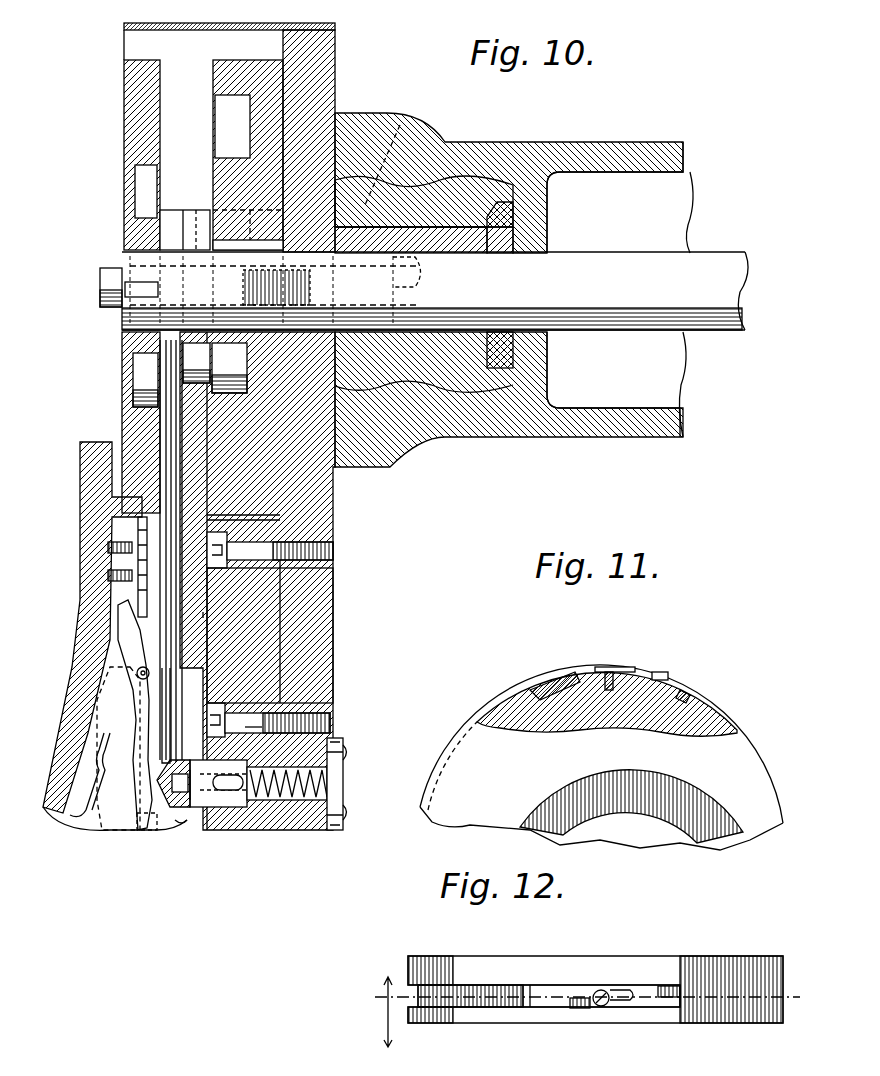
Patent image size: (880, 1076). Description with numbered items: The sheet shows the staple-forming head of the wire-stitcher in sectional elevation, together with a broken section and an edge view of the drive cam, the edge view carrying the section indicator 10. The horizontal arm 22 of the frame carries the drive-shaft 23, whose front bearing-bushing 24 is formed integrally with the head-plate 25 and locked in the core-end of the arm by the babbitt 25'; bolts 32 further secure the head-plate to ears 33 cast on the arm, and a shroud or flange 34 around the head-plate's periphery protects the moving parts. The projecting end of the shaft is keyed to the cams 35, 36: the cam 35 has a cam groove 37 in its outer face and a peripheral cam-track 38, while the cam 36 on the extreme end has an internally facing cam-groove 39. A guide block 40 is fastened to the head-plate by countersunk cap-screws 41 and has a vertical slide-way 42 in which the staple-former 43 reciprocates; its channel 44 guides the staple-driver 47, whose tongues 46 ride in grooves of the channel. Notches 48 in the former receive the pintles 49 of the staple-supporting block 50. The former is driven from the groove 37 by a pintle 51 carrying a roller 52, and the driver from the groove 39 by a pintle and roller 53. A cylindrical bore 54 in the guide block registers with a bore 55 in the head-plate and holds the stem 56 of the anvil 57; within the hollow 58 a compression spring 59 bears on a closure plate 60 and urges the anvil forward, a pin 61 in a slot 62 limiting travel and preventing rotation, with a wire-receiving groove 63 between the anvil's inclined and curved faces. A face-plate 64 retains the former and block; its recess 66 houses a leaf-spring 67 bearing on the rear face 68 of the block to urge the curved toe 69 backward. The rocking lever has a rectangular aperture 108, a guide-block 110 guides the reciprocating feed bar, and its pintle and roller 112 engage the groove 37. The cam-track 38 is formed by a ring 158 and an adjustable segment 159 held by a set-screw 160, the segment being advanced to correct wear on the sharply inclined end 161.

In FIG. 12, the Figure 10 section indicator 10 is at (567, 1012).
In FIG. 10, the arm 22 is at (650, 122).
In FIG. 10, the drive-shaft 23 is at (435, 291).
In FIG. 10, the bearing-bushing 24 is at (515, 233).
In FIG. 10, the head-plate 25 is at (431, 430).
In FIG. 10, the babbitt 25' is at (424, 313).
In FIG. 10, the bolts 32 is at (426, 273).
In FIG. 10, the ears 33 is at (395, 126).
In FIG. 10, the shroud or flange 34 is at (124, 26).
In FIG. 10, the cam 35 is at (225, 60).
In FIG. 11, the cam 35 is at (740, 752).
In FIG. 12, the cam 35 is at (708, 972).
In FIG. 10, the cam 36 is at (124, 101).
In FIG. 10, the cam groove 37 is at (216, 116).
In FIG. 11, the cam-track 38 is at (505, 700).
In FIG. 12, the cam-track 38 is at (465, 995).
In FIG. 10, the cam-groove 39 is at (157, 167).
In FIG. 11, the cam-groove 39 is at (631, 806).
In FIG. 10, the guide block 40 is at (260, 646).
In FIG. 10, the cap-screws 41 is at (333, 555).
In FIG. 10, the slide-way 42 is at (203, 615).
In FIG. 10, the staple-former 43 is at (195, 483).
In FIG. 10, the channel 44 is at (182, 715).
In FIG. 10, the tongues 46 is at (170, 436).
In FIG. 10, the staple-driver 47 is at (160, 421).
In FIG. 10, the notches 48 is at (118, 631).
In FIG. 10, the pintles 49 is at (137, 672).
In FIG. 10, the staple-supporting block 50 is at (127, 748).
In FIG. 10, the pintle 51 is at (196, 363).
In FIG. 10, the roller 52 is at (229, 368).
In FIG. 10, the pintle and roller 53 is at (133, 379).
In FIG. 10, the cylindrical bore 54 is at (246, 830).
In FIG. 10, the bore 55 is at (330, 832).
In FIG. 10, the stem 56 is at (192, 808).
In FIG. 10, the anvil 57 is at (176, 832).
In FIG. 10, the hollow 58 is at (286, 802).
In FIG. 10, the compression spring 59 is at (344, 788).
In FIG. 10, the closure plate 60 is at (344, 770).
In FIG. 10, the pin 61 is at (253, 720).
In FIG. 10, the slot 62 is at (215, 779).
In FIG. 10, the wire-receiving groove 63 is at (160, 831).
In FIG. 10, the face-plate 64 is at (76, 730).
In FIG. 10, the recess 66 is at (96, 751).
In FIG. 10, the leaf-spring 67 is at (70, 801).
In FIG. 10, the rear face 68 is at (80, 822).
In FIG. 10, the curved toe 69 is at (176, 830).
In FIG. 10, the rectangular aperture 108 is at (207, 186).
In FIG. 10, the guide-block 110 is at (192, 229).
In FIG. 10, the pintle and roller 112 is at (262, 269).
In FIG. 12, the ring 158 is at (645, 1005).
In FIG. 11, the adjustable segment 159 is at (548, 685).
In FIG. 12, the adjustable segment 159 is at (552, 1010).
In FIG. 11, the set-screw 160 is at (615, 668).
In FIG. 12, the set-screw 160 is at (603, 1008).
In FIG. 12, the inclined end 161 is at (528, 990).